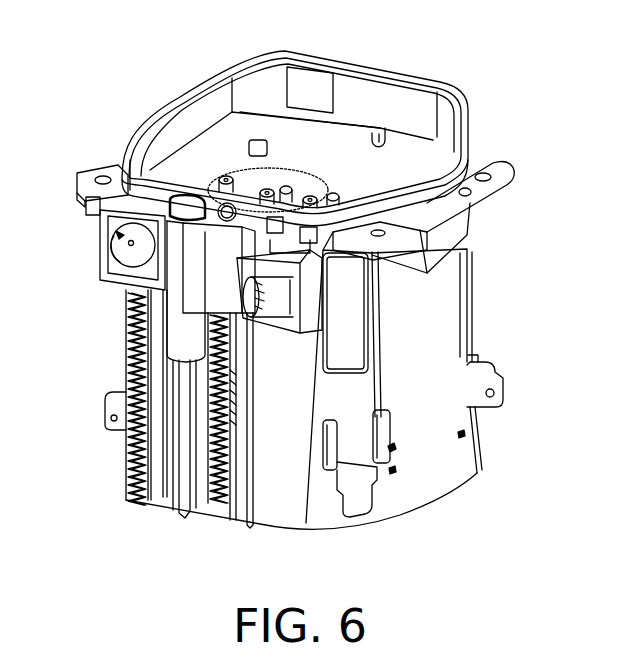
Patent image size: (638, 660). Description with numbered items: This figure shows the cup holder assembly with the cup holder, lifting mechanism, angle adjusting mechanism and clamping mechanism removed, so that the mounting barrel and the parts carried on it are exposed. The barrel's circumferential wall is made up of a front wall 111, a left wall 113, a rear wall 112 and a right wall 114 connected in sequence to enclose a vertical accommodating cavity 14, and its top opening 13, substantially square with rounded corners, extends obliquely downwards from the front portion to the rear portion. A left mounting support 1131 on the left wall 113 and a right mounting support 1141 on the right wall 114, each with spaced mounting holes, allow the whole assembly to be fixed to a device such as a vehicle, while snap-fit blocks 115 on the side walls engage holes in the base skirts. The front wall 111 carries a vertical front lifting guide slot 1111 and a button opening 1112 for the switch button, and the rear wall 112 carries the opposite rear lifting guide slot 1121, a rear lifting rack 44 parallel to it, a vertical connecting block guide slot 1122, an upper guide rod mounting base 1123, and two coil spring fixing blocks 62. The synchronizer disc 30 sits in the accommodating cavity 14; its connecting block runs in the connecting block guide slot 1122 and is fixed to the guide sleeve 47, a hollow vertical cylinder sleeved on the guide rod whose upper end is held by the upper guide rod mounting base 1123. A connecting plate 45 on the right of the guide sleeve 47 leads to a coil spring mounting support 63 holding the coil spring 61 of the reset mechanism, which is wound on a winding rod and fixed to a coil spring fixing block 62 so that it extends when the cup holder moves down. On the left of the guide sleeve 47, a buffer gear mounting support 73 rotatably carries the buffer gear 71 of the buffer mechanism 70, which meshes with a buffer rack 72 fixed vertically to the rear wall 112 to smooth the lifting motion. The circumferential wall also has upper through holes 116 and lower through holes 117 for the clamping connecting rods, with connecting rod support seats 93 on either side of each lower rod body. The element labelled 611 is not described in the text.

The accommodating cavity 14 is at (297, 118).
The top opening 13 is at (368, 74).
The synchronizer disc 30 is at (258, 146).
The coil spring fixing block 62 is at (224, 176).
The coil spring 61 is at (263, 300).
The coil spring mounting support 63 is at (375, 255).
The rim flange 611 is at (390, 194).
The front wall 111 is at (390, 88).
The front lifting guide slot 1111 is at (395, 128).
The button opening 1112 is at (310, 88).
The rear wall 112 is at (273, 493).
The rear lifting guide slot 1121 is at (243, 512).
The connecting block guide slot 1122 is at (180, 492).
The left wall 113 is at (180, 98).
The upper guide rod mounting base 1123 is at (187, 210).
The left mounting support 1131 is at (100, 175).
The right wall 114 is at (418, 340).
The right mounting support 1141 is at (440, 240).
The snap-fit block 115 is at (392, 478).
The upper through hole 116 is at (357, 318).
The lower through hole 117 is at (353, 515).
The buffer mechanism 70 is at (120, 230).
The buffer gear 71 is at (130, 247).
The buffer rack 72 is at (123, 328).
The buffer gear mounting support 73 is at (208, 292).
The connecting plate 45 is at (125, 299).
The guide sleeve 47 is at (183, 340).
The rear lifting rack 44 is at (195, 512).
The connecting rod support seat 93 is at (393, 447).